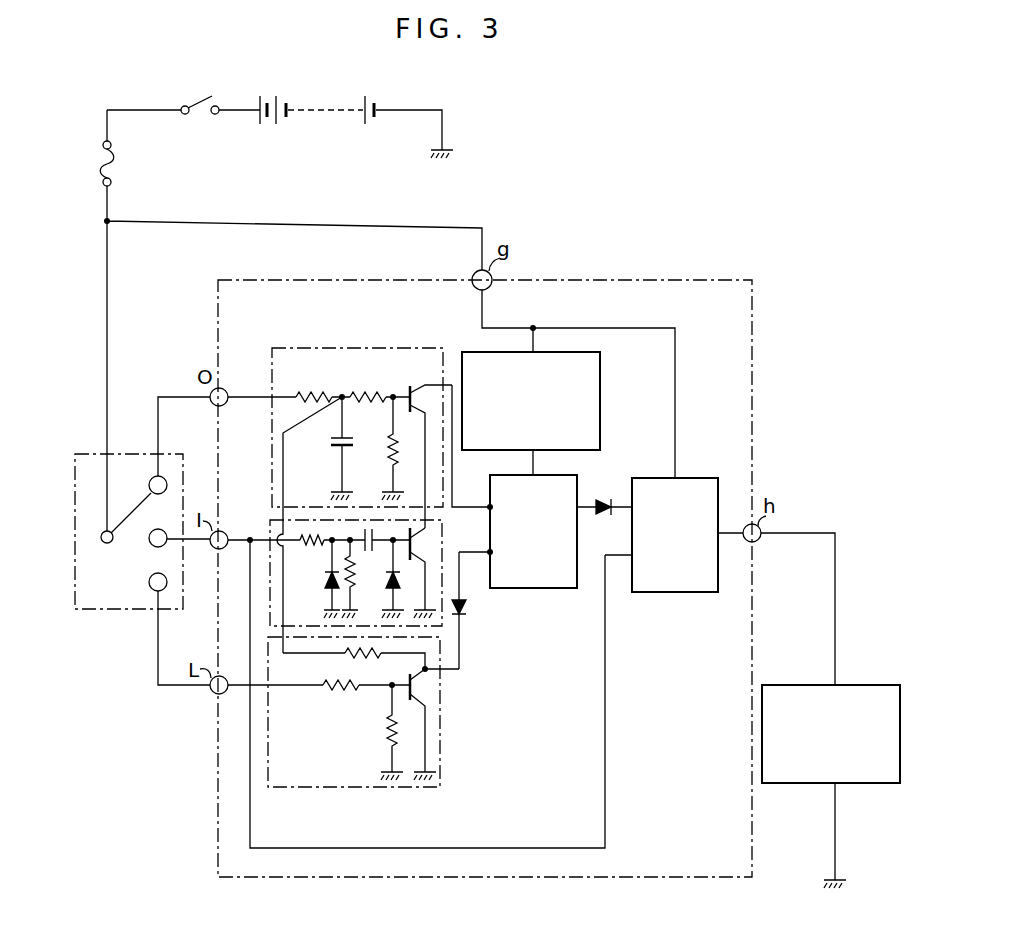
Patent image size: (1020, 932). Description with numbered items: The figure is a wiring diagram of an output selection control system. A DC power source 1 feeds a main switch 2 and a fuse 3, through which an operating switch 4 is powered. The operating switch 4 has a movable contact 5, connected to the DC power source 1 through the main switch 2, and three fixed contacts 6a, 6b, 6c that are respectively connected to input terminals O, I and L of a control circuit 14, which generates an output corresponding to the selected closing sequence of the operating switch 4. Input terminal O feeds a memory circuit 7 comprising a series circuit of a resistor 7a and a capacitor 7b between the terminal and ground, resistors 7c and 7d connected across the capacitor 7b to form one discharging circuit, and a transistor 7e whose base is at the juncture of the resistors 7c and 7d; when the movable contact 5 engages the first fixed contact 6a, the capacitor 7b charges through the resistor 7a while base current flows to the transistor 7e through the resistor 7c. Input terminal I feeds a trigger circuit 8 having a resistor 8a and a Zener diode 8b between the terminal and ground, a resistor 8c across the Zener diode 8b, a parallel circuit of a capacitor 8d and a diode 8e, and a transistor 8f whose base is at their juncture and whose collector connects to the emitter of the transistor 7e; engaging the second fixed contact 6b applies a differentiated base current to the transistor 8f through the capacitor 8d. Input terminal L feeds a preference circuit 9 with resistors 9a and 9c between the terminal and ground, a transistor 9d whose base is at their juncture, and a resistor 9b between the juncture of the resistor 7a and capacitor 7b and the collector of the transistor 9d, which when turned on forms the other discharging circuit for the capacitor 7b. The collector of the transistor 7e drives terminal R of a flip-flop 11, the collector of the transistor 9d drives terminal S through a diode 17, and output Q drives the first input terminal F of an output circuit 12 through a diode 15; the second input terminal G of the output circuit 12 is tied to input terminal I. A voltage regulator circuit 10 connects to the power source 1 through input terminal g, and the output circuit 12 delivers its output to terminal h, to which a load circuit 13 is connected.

The DC power source 1 is at (336, 109).
The main switch 2 is at (203, 98).
The fuse 3 is at (100, 167).
The operating switch 4 is at (112, 613).
The movable contact 5 is at (139, 504).
The first fixed contact 6a is at (168, 484).
The second fixed contact 6b is at (148, 549).
The third fixed contact 6c is at (168, 584).
The memory circuit 7 is at (366, 348).
The resistor 7a is at (310, 394).
The capacitor 7b is at (350, 440).
The resistor 7c is at (371, 394).
The resistor 7d is at (386, 446).
The transistor 7e is at (423, 389).
The trigger circuit 8 is at (271, 572).
The resistor 8a is at (304, 519).
The Zener diode 8b is at (324, 573).
The resistor 8c is at (355, 586).
The capacitor 8d is at (372, 552).
The diode 8e is at (399, 577).
The transistor 8f is at (418, 543).
The preference circuit 9 is at (372, 788).
The resistor 9a is at (330, 696).
The resistor 9b is at (370, 657).
The resistor 9c is at (383, 732).
The transistor 9d is at (429, 690).
The voltage regulator circuit 10 is at (601, 378).
The flip-flop 11 is at (540, 589).
The output circuit 12 is at (705, 478).
The load circuit 13 is at (818, 683).
The control circuit 14 is at (614, 880).
The diode 15 is at (606, 497).
The diode 17 is at (467, 608).